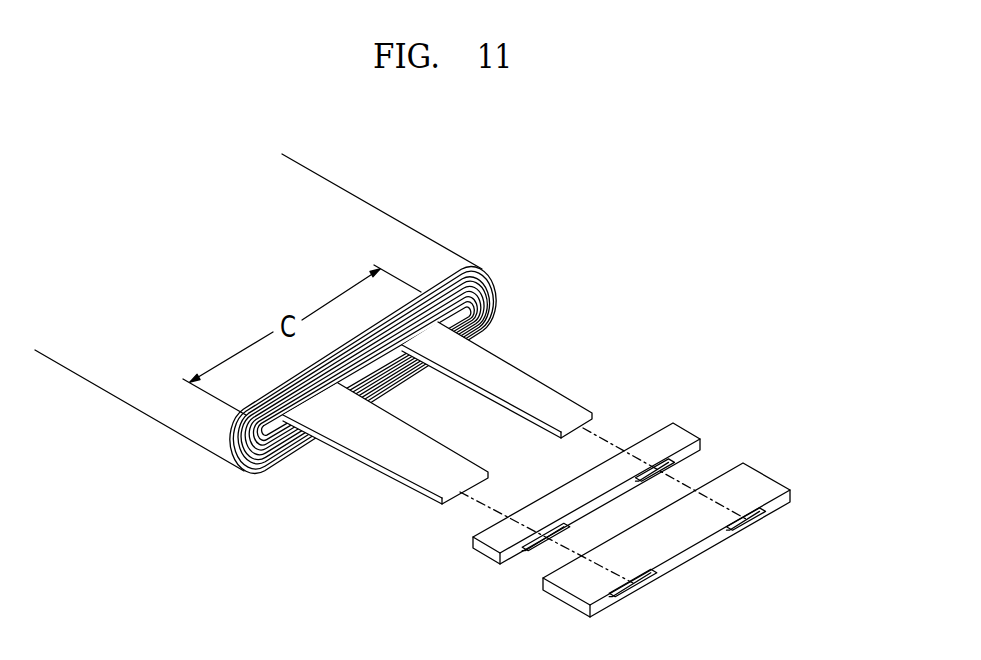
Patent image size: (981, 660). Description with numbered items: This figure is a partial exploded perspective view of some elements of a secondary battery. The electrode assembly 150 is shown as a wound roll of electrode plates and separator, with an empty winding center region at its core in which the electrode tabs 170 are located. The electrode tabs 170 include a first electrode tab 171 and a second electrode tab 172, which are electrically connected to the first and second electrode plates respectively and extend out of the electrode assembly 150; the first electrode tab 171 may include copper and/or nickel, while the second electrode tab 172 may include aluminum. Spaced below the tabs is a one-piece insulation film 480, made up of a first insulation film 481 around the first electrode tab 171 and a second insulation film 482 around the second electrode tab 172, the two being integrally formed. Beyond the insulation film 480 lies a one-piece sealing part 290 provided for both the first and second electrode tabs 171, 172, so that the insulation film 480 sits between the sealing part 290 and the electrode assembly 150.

The electrode assembly 150 is at (400, 191).
The electrode tab 170 is at (450, 405).
The first electrode tab 171 is at (560, 398).
The second electrode tab 172 is at (415, 477).
The insulation film 480 is at (606, 470).
The first insulation film 481 is at (650, 438).
The second insulation film 482 is at (543, 500).
The sealing part 290 is at (767, 480).